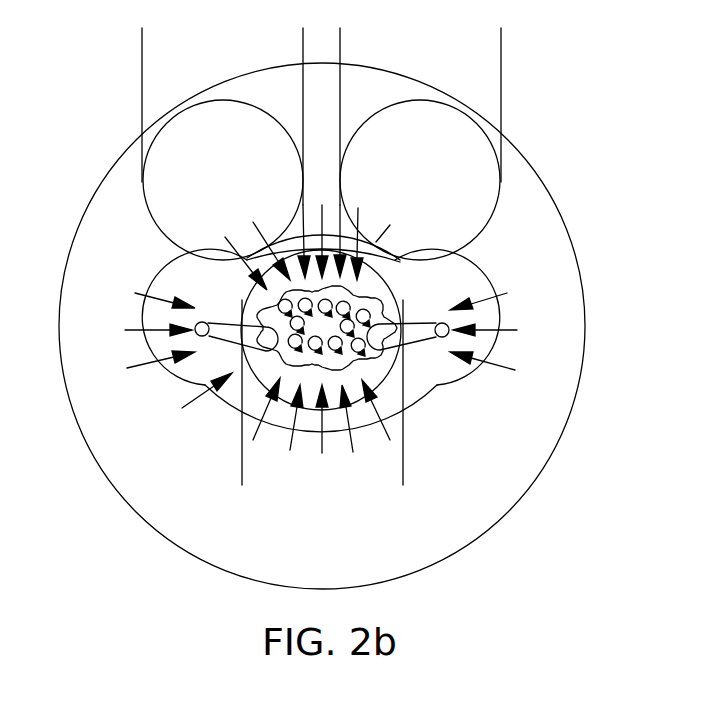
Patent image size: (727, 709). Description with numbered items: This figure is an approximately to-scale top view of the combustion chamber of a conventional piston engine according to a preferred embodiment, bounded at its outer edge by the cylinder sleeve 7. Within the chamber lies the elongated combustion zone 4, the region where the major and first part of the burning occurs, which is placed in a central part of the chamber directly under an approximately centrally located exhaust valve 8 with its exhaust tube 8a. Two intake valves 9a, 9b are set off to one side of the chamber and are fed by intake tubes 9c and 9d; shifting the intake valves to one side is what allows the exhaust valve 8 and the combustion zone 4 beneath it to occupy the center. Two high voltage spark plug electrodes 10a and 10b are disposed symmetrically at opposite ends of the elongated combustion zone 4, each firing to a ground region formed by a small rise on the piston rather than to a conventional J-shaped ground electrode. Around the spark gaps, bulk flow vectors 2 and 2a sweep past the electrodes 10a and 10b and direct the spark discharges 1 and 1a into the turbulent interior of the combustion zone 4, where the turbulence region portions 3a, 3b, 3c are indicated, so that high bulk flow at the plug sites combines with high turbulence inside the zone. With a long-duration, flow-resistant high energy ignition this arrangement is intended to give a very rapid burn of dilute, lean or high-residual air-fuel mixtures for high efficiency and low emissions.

The spark discharges 1 is at (230, 338).
The spark discharges 1a is at (415, 332).
The bulk flow vectors 2 is at (147, 358).
The bulk flow vectors 2a is at (507, 367).
The upper inflow passages 3a is at (376, 230).
The lower inflow passages 3b is at (353, 452).
The curved channel 3c is at (388, 260).
The combustion zone 4 is at (430, 290).
The cylinder sleeve 7 is at (552, 196).
The exhaust valve 8 is at (383, 402).
The exhaust tube 8a is at (405, 448).
The intake valve 9a is at (240, 100).
The intake valve 9b is at (403, 100).
The intake tube 9c is at (142, 82).
The intake tube 9d is at (501, 82).
The high voltage spark plug electrode 10a is at (192, 295).
The high voltage spark plug electrode 10b is at (447, 337).